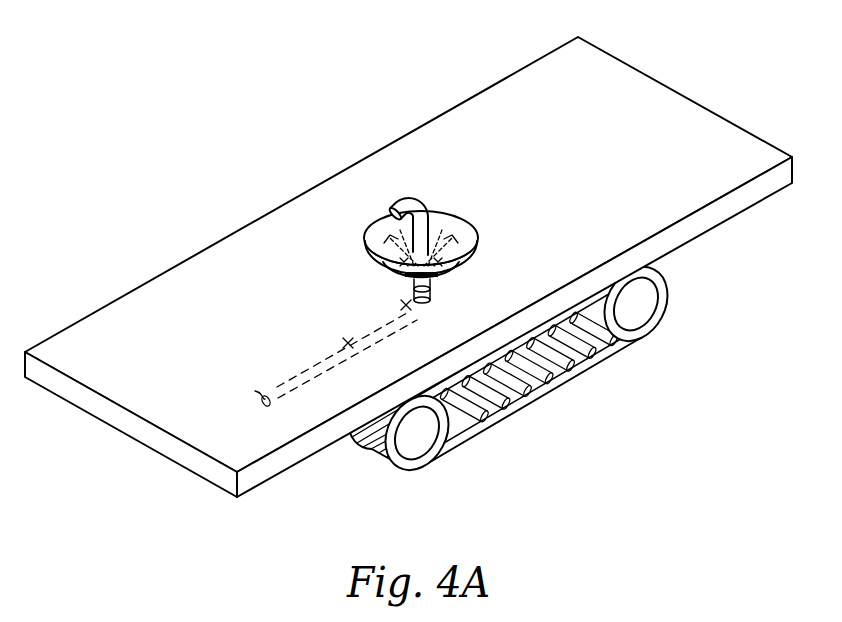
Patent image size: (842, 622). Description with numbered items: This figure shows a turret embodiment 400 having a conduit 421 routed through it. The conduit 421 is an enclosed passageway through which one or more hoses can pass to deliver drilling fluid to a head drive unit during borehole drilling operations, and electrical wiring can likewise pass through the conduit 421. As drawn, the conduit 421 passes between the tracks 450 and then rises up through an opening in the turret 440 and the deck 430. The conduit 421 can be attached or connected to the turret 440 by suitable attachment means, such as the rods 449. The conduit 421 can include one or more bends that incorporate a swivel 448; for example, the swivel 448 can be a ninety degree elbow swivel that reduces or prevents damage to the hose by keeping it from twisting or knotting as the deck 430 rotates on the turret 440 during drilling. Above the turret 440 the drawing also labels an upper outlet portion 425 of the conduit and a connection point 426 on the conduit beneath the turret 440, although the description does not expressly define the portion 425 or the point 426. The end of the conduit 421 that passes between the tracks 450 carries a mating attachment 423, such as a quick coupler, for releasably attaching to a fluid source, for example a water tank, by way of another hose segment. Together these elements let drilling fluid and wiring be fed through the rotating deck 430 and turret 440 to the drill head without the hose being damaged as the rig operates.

The turret embodiment 400 is at (203, 133).
The deck 430 is at (558, 87).
The tracks 450 is at (598, 366).
The turret 440 is at (476, 260).
The rods 449 is at (471, 252).
The swivel 448 is at (430, 290).
The supply pipe 425 is at (397, 204).
The connection point 426 is at (397, 305).
The conduit 421 is at (346, 334).
The mating attachment 423 is at (258, 392).